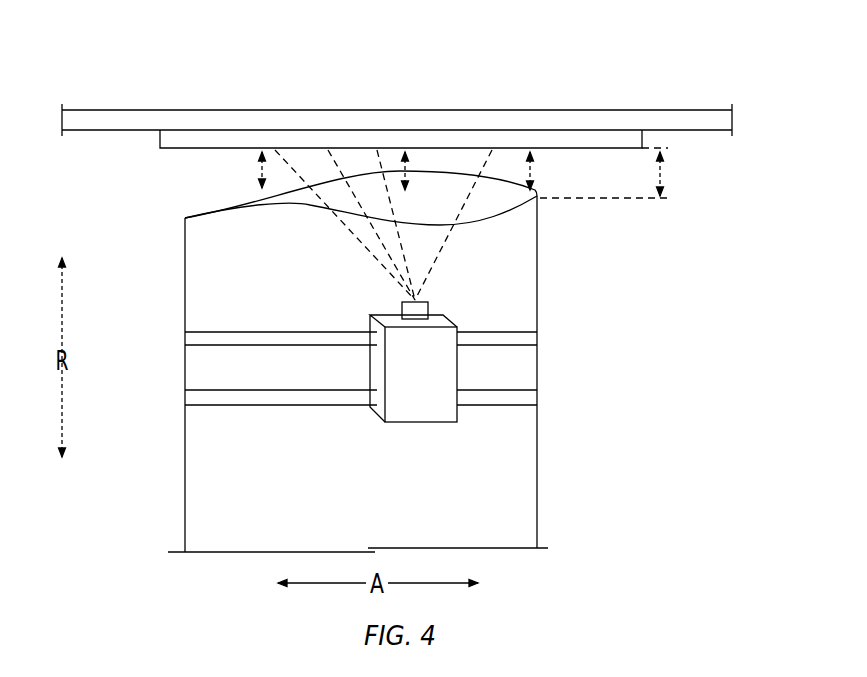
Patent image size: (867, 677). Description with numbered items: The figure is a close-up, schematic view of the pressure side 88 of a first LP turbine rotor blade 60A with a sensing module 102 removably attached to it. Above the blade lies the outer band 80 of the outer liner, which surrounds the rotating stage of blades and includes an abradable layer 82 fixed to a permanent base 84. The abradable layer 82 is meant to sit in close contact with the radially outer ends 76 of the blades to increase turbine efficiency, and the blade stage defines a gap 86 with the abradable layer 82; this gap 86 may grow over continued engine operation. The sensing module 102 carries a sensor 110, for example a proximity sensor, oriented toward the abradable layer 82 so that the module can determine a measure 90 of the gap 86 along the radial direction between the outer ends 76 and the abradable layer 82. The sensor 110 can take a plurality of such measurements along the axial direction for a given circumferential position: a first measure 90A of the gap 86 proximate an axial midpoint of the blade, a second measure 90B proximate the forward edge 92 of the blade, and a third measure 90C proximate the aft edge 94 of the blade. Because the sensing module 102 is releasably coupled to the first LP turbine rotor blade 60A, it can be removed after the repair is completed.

The outer band 80 is at (392, 67).
The radially outer ends 76 is at (218, 218).
The abradable layer 82 is at (500, 133).
The permanent base 84 is at (656, 110).
The gap 86 is at (553, 178).
The measure 90 is at (668, 173).
The first measure 90A is at (415, 300).
The second measure 90B is at (415, 300).
The third measure 90C is at (415, 300).
The pressure side 88 is at (222, 496).
The forward edge 92 is at (554, 416).
The aft edge 94 is at (171, 365).
The sensing module 102 is at (521, 310).
The sensor 110 is at (402, 310).
The first LP turbine rotor blade 60A is at (530, 472).